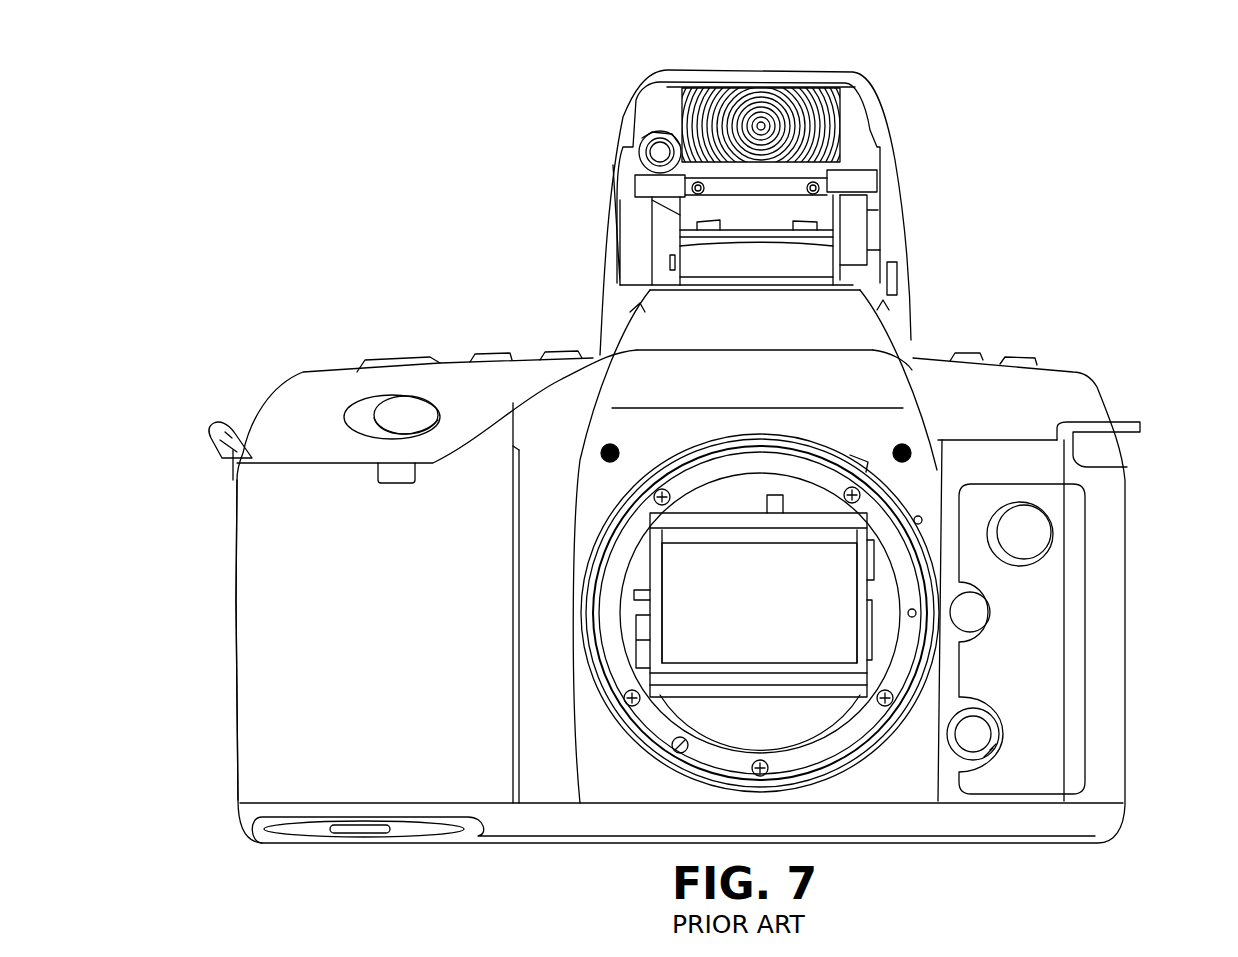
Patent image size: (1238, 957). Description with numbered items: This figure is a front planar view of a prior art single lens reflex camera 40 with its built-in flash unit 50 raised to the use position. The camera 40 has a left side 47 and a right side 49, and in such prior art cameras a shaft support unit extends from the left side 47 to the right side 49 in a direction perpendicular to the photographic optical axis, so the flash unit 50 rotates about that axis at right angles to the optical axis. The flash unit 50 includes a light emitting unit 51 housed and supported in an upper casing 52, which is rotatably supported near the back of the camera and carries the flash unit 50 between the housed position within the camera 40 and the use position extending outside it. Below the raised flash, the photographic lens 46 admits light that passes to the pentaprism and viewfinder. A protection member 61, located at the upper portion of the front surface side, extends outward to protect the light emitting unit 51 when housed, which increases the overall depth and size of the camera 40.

The single lens reflex camera 40 is at (1052, 274).
The photographic lens 46 is at (695, 630).
The left side 47 is at (232, 608).
The right side 49 is at (1125, 620).
The built-in flash unit 50 is at (895, 157).
The light emitting unit 51 is at (682, 108).
The upper casing 52 is at (797, 69).
The protection member 61 is at (660, 305).